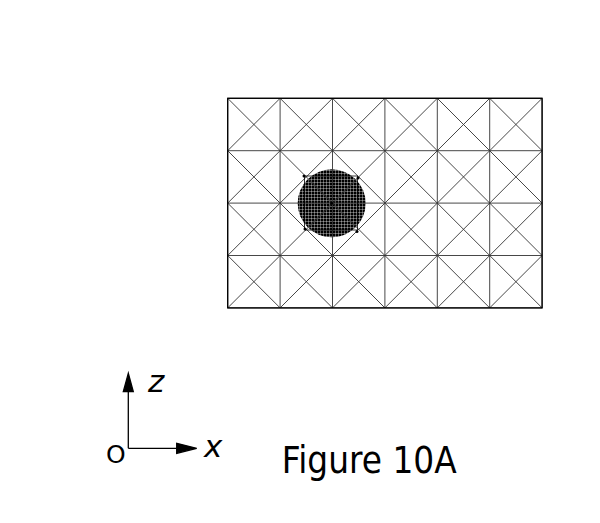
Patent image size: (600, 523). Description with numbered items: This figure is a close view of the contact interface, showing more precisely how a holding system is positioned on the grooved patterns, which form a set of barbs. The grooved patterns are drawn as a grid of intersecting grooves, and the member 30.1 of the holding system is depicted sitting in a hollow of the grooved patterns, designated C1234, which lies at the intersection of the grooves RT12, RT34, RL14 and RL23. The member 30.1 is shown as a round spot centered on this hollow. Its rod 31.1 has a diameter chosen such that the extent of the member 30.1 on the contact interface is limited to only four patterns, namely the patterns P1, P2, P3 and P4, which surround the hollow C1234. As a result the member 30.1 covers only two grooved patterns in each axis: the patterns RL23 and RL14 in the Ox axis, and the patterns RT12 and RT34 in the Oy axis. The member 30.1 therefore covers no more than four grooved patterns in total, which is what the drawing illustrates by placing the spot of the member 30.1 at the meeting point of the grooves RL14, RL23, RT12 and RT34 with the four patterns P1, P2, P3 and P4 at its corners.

The member 30.1 is at (355, 192).
The rod 31.1 is at (357, 213).
The hollow of the grooved patterns C1234 is at (332, 203).
The pattern P1 is at (303, 176).
The pattern P2 is at (305, 229).
The pattern P3 is at (357, 232).
The pattern P4 is at (358, 178).
The groove RL14 is at (288, 173).
The groove RL23 is at (288, 229).
The groove RT12 is at (297, 247).
The groove RT34 is at (366, 247).